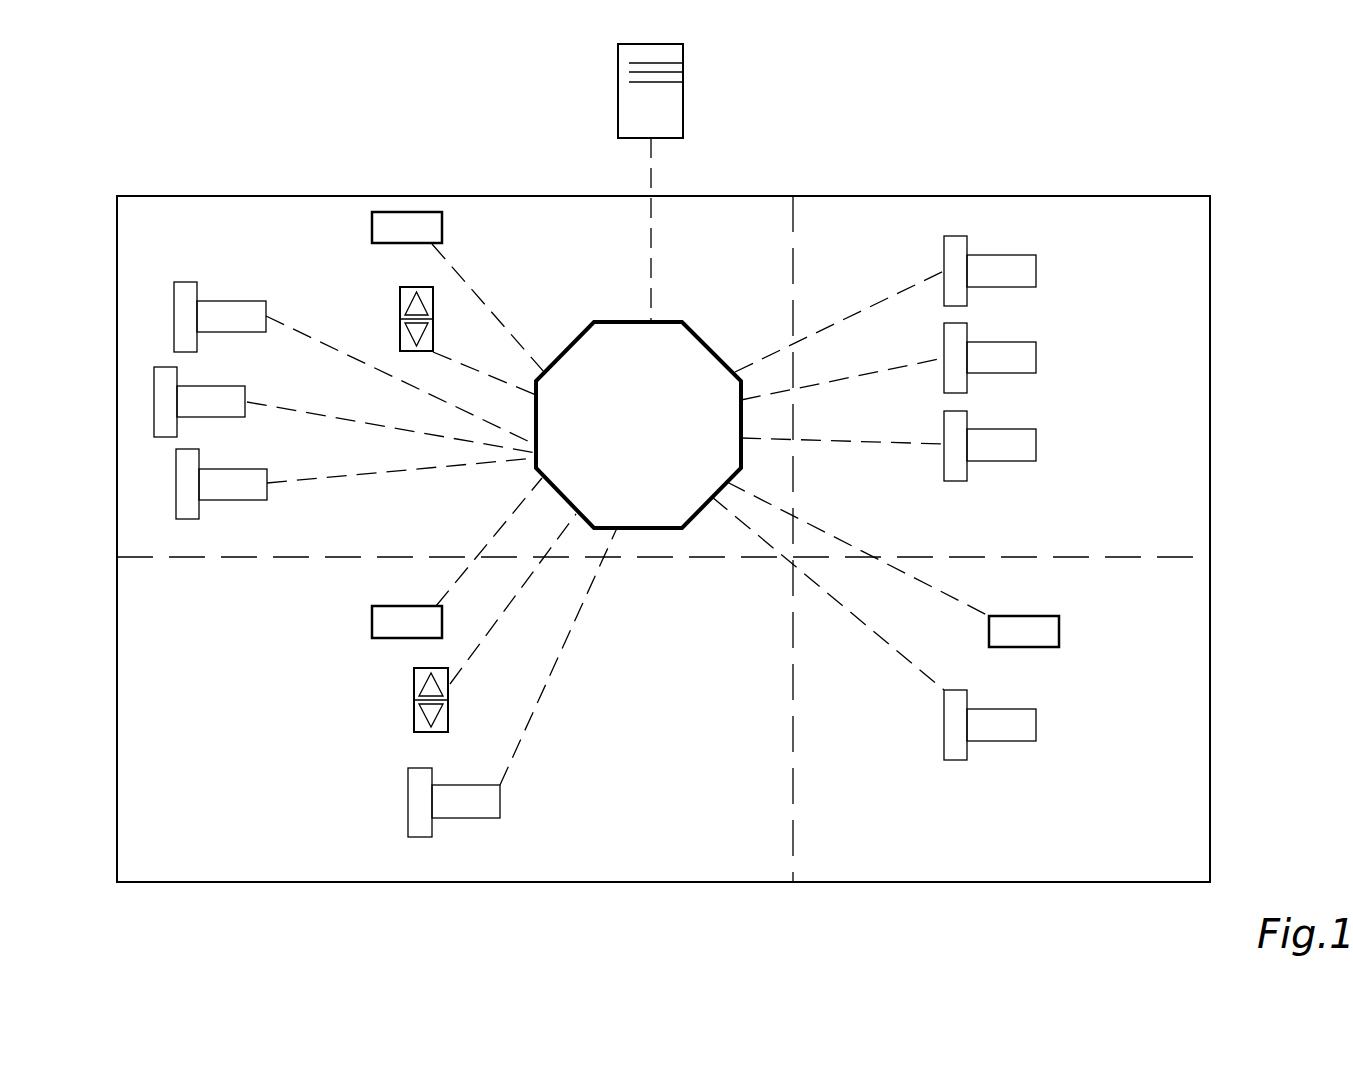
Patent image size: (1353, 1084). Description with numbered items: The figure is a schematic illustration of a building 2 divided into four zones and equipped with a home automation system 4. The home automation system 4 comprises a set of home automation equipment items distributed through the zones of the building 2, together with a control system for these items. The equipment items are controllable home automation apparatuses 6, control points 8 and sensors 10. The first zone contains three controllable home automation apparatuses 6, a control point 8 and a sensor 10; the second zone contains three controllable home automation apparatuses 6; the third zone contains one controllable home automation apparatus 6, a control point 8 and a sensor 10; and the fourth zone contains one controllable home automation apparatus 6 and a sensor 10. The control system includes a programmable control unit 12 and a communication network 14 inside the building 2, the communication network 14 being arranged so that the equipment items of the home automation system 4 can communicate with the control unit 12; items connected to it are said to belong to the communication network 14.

The building 2 is at (1210, 221).
The home automation system 4 is at (1142, 158).
The controllable home automation apparatus 6 is at (188, 322).
The control point 8 is at (400, 320).
The sensor 10 is at (383, 224).
The programmable control unit 12 is at (630, 120).
The communication network 14 is at (638, 425).